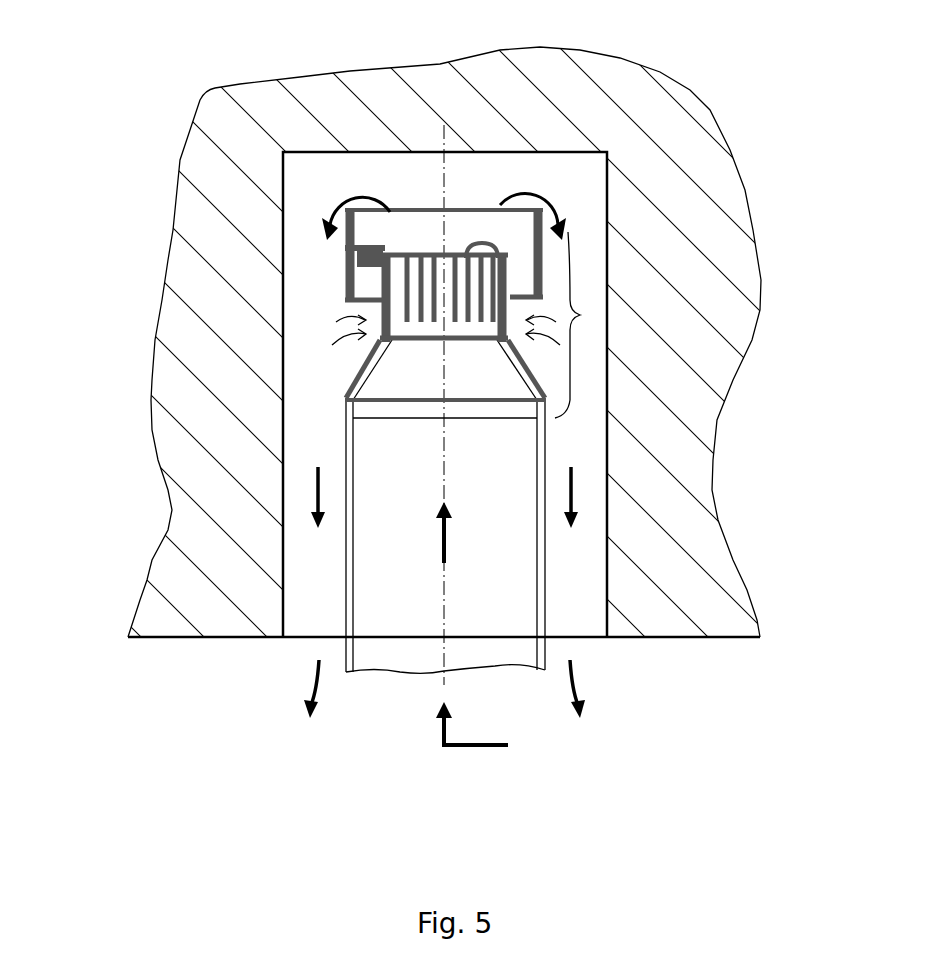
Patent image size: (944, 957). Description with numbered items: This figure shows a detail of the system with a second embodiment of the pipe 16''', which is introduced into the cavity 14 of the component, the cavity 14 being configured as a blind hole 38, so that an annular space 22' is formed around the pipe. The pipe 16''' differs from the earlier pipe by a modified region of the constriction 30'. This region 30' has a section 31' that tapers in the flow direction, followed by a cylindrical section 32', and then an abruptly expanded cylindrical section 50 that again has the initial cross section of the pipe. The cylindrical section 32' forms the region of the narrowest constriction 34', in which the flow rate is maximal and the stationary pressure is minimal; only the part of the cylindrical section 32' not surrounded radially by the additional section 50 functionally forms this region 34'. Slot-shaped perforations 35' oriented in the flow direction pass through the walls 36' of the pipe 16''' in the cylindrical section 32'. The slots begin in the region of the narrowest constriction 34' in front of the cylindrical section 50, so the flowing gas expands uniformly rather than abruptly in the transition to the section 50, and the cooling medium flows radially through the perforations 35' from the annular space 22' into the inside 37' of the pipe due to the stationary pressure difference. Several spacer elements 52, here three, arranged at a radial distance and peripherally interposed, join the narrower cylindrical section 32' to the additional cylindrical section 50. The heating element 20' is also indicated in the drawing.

The heating element 20' is at (444, 159).
The cylindrical section 50 is at (417, 233).
The spacer elements 52 is at (385, 258).
The slot-shaped perforations 35' is at (277, 279).
The cylindrical section 32' is at (277, 297).
The region of the narrowest constriction 34' is at (303, 344).
The tapering section 31' is at (295, 381).
The constriction region 30' is at (701, 325).
The inside of the pipe 37' is at (472, 623).
The annular space 22' is at (454, 592).
The walls of the pipe 36' is at (320, 712).
The pipe 16''' is at (445, 584).
The cavity 14 is at (481, 461).
The blind hole 38 is at (588, 615).